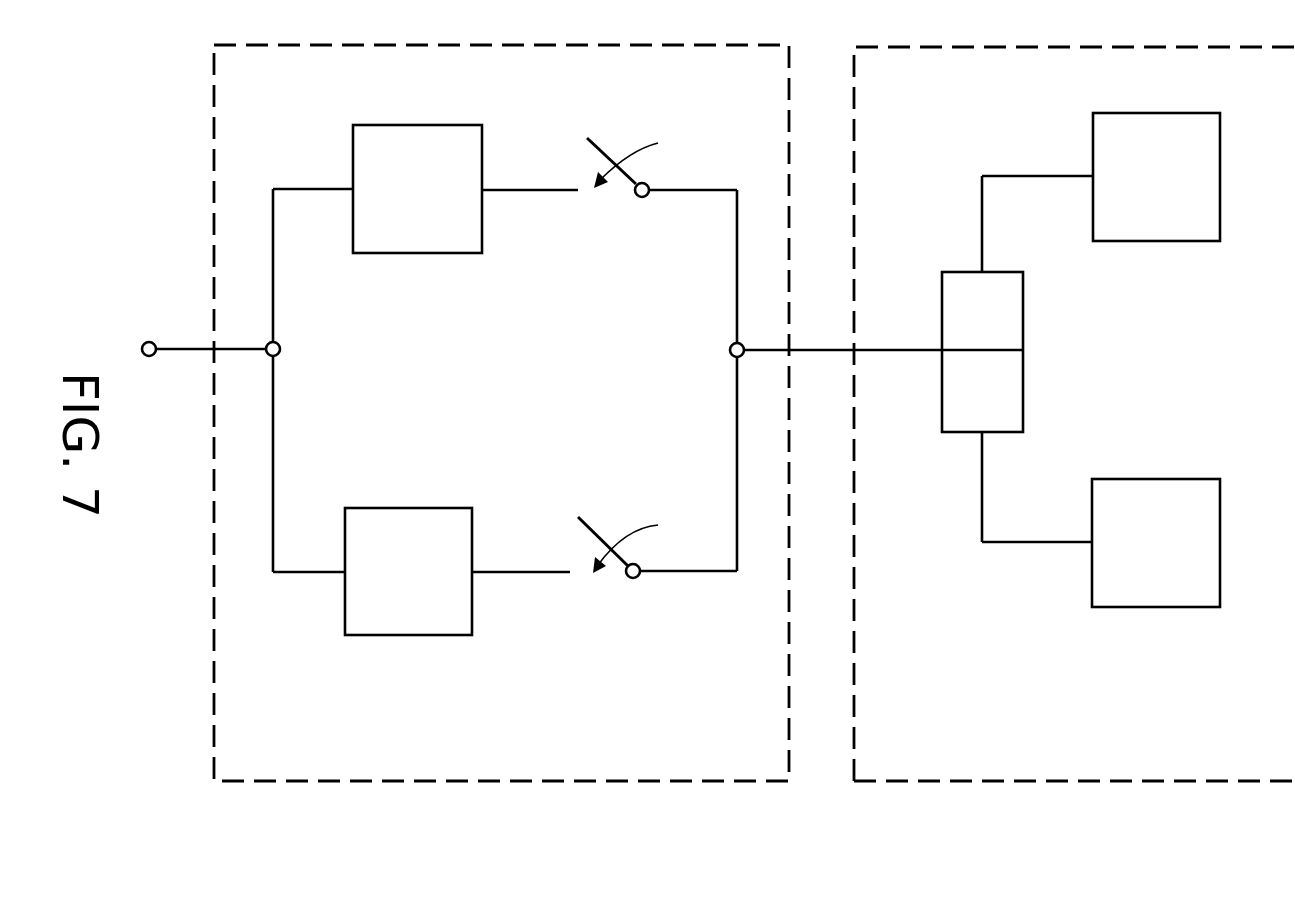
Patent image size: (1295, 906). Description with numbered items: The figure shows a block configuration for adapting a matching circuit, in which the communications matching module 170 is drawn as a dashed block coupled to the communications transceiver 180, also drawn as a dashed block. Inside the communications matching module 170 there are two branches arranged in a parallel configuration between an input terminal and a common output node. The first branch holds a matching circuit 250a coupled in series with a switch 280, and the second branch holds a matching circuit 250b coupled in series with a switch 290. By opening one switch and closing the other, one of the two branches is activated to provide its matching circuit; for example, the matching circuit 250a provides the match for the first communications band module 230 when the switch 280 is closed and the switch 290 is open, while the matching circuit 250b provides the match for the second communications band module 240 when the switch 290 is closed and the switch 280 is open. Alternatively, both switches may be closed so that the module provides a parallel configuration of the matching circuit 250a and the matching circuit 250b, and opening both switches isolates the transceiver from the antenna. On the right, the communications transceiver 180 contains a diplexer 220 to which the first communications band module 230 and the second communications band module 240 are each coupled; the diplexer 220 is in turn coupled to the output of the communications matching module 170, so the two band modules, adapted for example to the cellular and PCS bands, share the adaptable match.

The communications matching module 170 is at (771, 770).
The communications transceiver 180 is at (1279, 770).
The diplexer 220 is at (1023, 398).
The first communications band module 230 is at (1183, 195).
The second communications band module 240 is at (1183, 561).
The matching circuit 250a is at (453, 210).
The matching circuit 250b is at (444, 592).
The switch 280 is at (627, 222).
The switch 290 is at (542, 526).